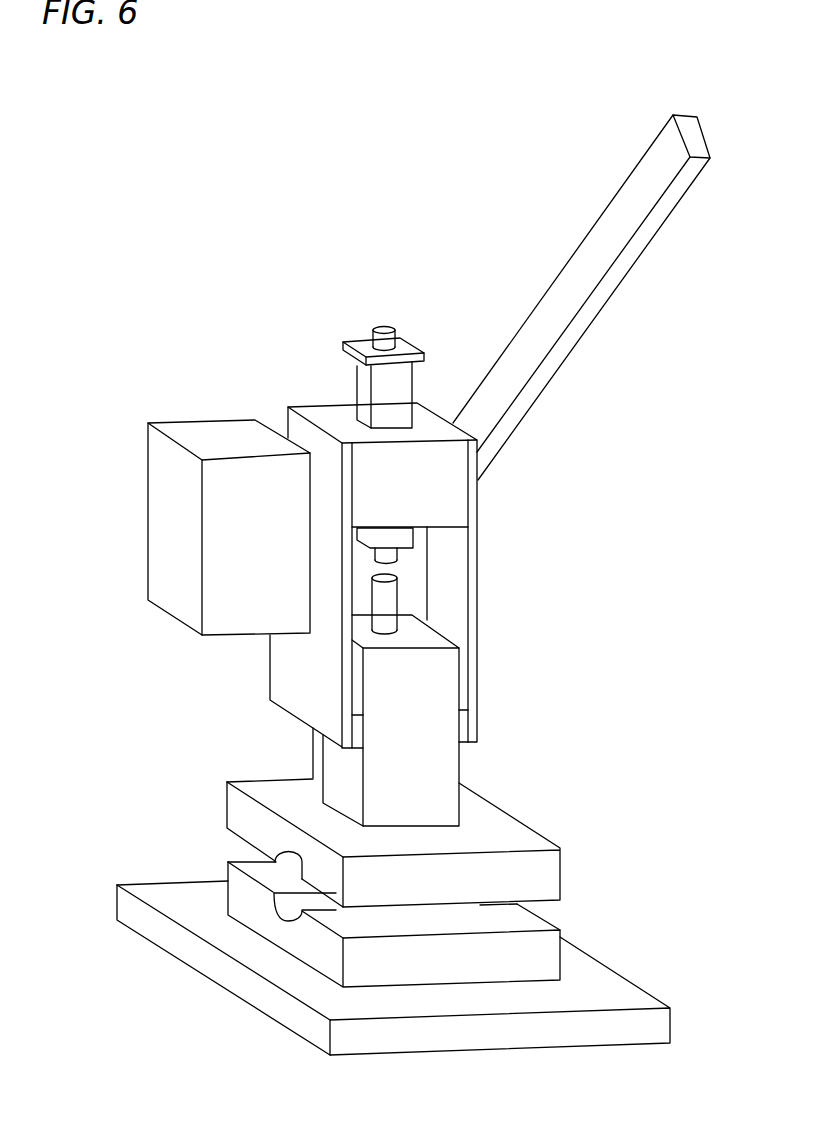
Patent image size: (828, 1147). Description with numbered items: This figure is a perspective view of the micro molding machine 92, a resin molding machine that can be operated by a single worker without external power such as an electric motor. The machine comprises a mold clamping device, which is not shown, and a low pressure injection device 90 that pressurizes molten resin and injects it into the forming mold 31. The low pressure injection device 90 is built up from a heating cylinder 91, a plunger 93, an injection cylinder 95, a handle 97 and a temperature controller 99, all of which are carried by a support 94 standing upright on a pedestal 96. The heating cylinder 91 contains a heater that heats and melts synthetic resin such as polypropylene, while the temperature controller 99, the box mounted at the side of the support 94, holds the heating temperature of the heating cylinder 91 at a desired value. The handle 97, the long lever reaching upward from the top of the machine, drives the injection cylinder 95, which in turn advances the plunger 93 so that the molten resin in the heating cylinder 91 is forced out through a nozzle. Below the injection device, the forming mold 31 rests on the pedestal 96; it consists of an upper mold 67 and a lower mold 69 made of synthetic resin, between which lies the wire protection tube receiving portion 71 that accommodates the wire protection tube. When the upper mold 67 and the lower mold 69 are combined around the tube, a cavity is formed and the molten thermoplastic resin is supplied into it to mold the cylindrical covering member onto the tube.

The forming mold 31 is at (213, 833).
The upper mold 67 is at (463, 880).
The lower mold 69 is at (404, 962).
The wire protection tube receiving portion 71 is at (275, 912).
The low pressure injection device 90 is at (513, 532).
The heating cylinder 91 is at (460, 779).
The micro molding machine 92 is at (303, 284).
The plunger 93 is at (385, 597).
The support 94 is at (312, 767).
The injection cylinder 95 is at (356, 395).
The pedestal 96 is at (633, 978).
The handle 97 is at (631, 271).
The temperature controller 99 is at (165, 520).